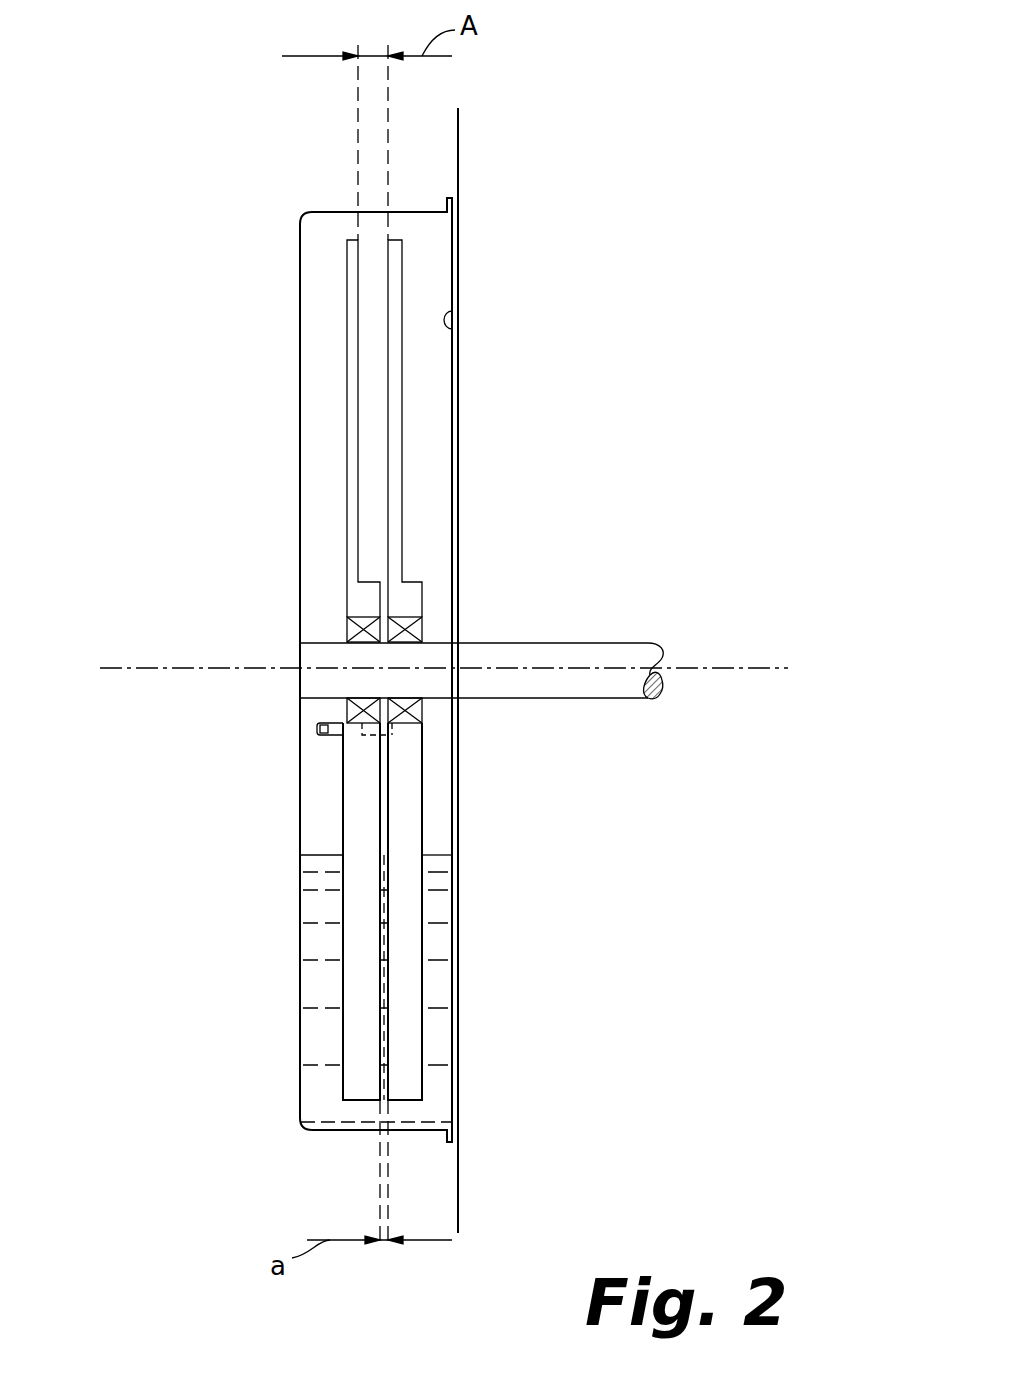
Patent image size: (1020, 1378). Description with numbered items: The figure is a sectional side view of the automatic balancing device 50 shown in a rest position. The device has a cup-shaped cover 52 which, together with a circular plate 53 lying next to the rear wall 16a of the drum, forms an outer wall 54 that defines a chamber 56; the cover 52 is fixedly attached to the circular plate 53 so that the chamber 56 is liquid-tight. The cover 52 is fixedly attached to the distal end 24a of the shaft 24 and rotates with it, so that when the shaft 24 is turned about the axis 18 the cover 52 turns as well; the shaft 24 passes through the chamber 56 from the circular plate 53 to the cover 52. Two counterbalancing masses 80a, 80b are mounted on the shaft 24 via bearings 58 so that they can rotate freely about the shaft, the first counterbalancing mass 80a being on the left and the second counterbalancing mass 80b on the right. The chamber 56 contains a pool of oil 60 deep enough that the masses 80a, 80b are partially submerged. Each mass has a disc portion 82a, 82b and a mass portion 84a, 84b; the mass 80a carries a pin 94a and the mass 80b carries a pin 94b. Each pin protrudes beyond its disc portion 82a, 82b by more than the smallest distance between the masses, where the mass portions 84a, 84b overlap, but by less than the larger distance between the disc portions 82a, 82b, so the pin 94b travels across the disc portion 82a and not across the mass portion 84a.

The rear wall 16a is at (460, 405).
The axis 18 is at (128, 668).
The shaft 24 is at (592, 660).
The distal end 24a is at (310, 685).
The automatic balancing device 50 is at (192, 327).
The cup-shaped cover 52 is at (300, 395).
The circular plate 53 is at (458, 330).
The outer wall 54 is at (318, 210).
The chamber 56 is at (423, 490).
The bearings 58 is at (345, 628).
The oil 60 is at (438, 1045).
The first counterbalancing mass 80a is at (355, 1002).
The second counterbalancing mass 80b is at (405, 833).
The disc portion 82a is at (348, 248).
The disc portion 82b is at (400, 295).
The mass portion 84a is at (358, 910).
The mass portion 84b is at (407, 948).
The pin 94a is at (318, 728).
The pin 94b is at (400, 730).